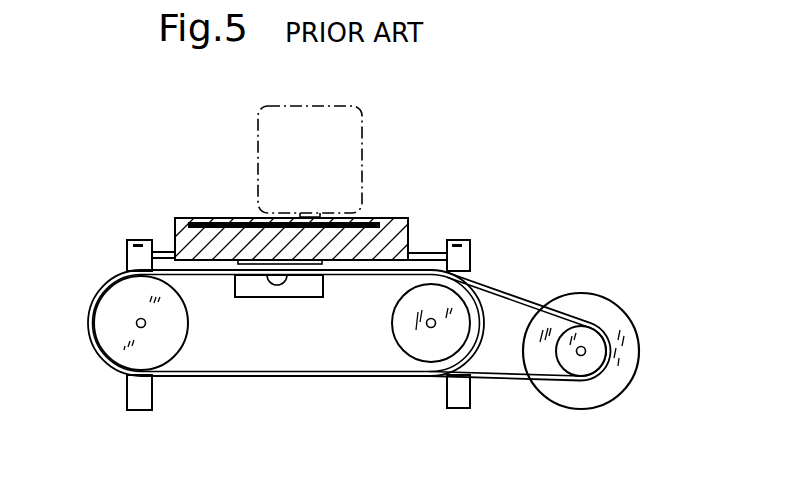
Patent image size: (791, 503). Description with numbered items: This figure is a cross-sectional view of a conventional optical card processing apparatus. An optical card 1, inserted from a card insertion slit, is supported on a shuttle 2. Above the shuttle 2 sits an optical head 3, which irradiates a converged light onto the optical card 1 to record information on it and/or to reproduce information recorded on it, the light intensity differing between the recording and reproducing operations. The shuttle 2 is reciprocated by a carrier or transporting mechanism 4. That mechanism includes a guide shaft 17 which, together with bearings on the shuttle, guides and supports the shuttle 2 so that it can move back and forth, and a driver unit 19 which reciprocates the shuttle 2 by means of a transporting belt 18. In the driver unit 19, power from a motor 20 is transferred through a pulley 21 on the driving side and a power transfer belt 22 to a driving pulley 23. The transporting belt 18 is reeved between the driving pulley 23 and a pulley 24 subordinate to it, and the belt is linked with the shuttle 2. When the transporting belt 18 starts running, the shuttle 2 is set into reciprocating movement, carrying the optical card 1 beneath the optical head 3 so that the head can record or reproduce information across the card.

The optical card 1 is at (215, 222).
The shuttle 2 is at (398, 220).
The optical head 3 is at (333, 103).
The transporting mechanism 4 is at (484, 231).
The guide shaft 17 is at (433, 252).
The transporting belt 18 is at (97, 291).
The driver unit 19 is at (561, 355).
The motor 20 is at (632, 367).
The pulley on a driving side 21 is at (580, 368).
The power transfer belt 22 is at (517, 297).
The driving pulley 23 is at (447, 373).
The subordinate pulley 24 is at (107, 330).